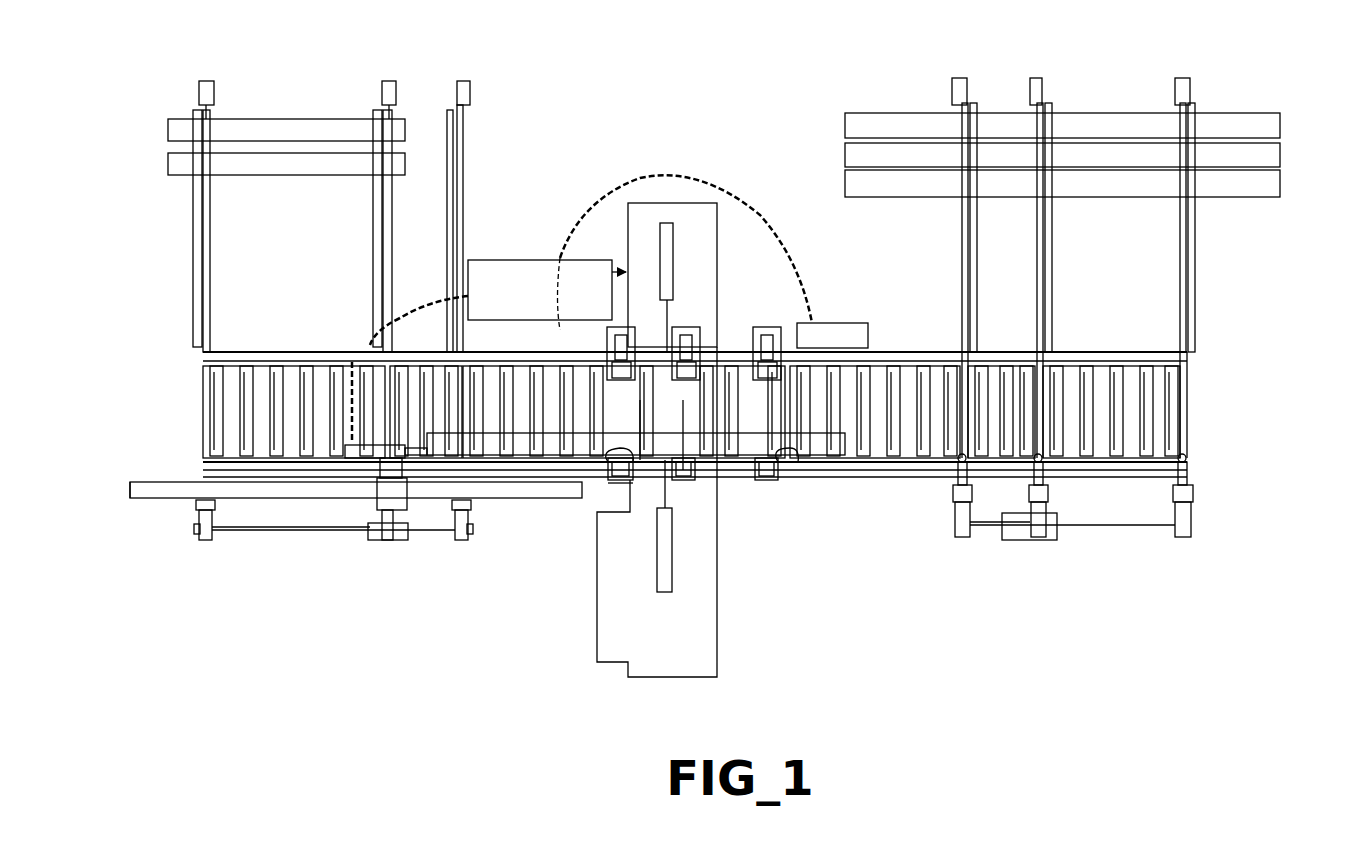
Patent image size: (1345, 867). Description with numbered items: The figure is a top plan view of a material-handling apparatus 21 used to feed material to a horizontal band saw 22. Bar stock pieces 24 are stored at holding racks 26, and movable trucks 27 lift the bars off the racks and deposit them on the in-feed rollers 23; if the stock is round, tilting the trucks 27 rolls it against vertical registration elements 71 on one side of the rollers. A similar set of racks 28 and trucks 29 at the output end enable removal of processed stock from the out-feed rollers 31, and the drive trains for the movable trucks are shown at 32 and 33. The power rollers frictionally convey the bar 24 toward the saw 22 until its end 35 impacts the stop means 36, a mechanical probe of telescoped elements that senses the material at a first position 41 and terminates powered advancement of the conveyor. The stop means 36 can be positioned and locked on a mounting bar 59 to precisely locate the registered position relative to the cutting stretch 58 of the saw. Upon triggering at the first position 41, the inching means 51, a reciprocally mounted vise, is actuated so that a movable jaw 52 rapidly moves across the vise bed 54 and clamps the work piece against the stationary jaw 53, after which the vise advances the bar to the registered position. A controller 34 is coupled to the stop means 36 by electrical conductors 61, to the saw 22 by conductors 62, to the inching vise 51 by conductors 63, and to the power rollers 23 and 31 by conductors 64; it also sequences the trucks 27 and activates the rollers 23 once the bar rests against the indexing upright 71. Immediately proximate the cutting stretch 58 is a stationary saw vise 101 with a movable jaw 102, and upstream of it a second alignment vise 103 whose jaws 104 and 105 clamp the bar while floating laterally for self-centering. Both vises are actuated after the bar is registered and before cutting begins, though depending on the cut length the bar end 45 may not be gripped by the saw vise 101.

The material-handling apparatus 21 is at (383, 590).
The horizontal band saw 22 is at (717, 630).
The in-feed rollers 23 is at (1140, 398).
The bar stock pieces 24 is at (285, 160).
The holding stations or racks 26 is at (1035, 290).
The movable trucks 27 is at (962, 260).
The racks 28 is at (193, 240).
The trucks 29 is at (212, 222).
The out-feed rollers 31 is at (290, 437).
The drive train means 32 is at (1117, 535).
The drive train means 33 is at (300, 540).
The controller 34 is at (512, 260).
The end of bar stock 35 is at (168, 163).
The stop means 36 is at (363, 465).
The first position 41 is at (425, 468).
The end of the bar 45 is at (1280, 160).
The inching means 51 is at (610, 487).
The movable clamping jaw 52 is at (603, 382).
The stationary clamping jaw 53 is at (590, 462).
The vise bed 54 is at (635, 410).
The cutting stretch 58 is at (683, 470).
The mounting bar 59 is at (258, 493).
The electrical conductors 61 is at (372, 338).
The conductors 62 is at (625, 270).
The conductors 63 is at (620, 327).
The conductors 64 is at (706, 170).
The vertical registration elements 71 is at (1190, 458).
The stationary saw vise 101 is at (690, 478).
The movable jaw 102 is at (705, 380).
The second vise 103 is at (773, 327).
The jaw of second vise 104 is at (820, 360).
The jaw of second vise 105 is at (780, 465).